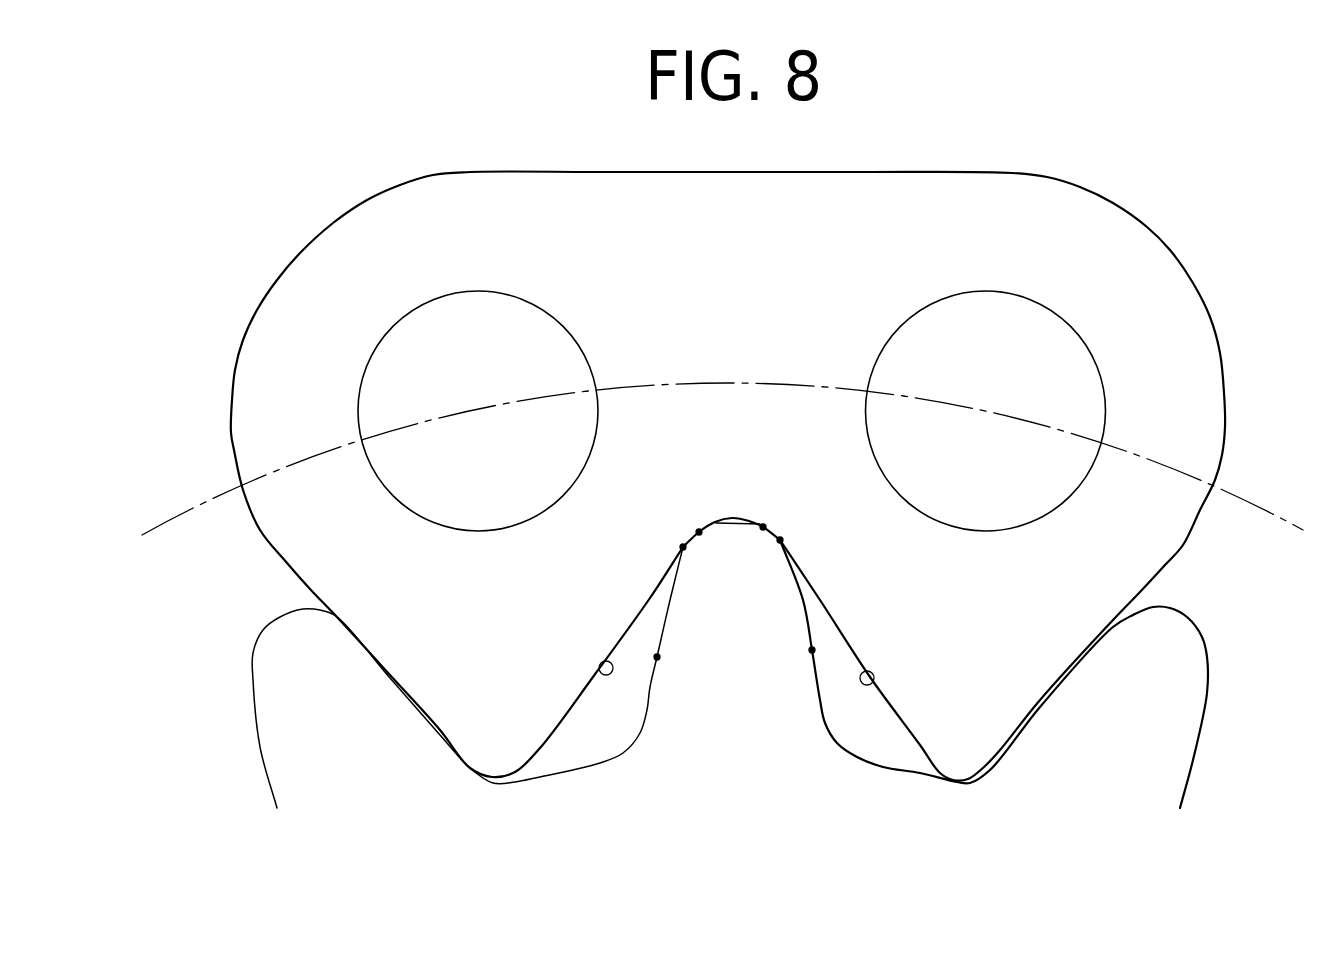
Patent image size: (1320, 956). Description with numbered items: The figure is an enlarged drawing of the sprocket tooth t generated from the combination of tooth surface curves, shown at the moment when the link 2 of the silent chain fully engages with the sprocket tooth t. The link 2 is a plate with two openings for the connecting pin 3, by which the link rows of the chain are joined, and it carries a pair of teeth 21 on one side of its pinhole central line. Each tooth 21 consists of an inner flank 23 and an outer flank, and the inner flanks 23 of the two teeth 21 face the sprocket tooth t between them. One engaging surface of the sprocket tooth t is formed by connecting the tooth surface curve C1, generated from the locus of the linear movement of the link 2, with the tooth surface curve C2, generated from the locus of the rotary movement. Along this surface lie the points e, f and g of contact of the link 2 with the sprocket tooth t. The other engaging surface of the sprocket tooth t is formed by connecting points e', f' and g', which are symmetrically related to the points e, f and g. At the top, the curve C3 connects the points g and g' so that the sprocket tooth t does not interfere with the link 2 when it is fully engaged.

The link 2 is at (1156, 194).
The connecting pin 3 is at (468, 320).
The tooth 21 is at (500, 757).
The inner flank 23 is at (595, 678).
The tooth surface curve C1 is at (662, 612).
The tooth surface curve C2 is at (696, 532).
The curve C3 is at (740, 523).
The point of contact e is at (734, 665).
The point of contact f is at (780, 548).
The point of contact g is at (791, 494).
The sprocket tooth t is at (758, 720).